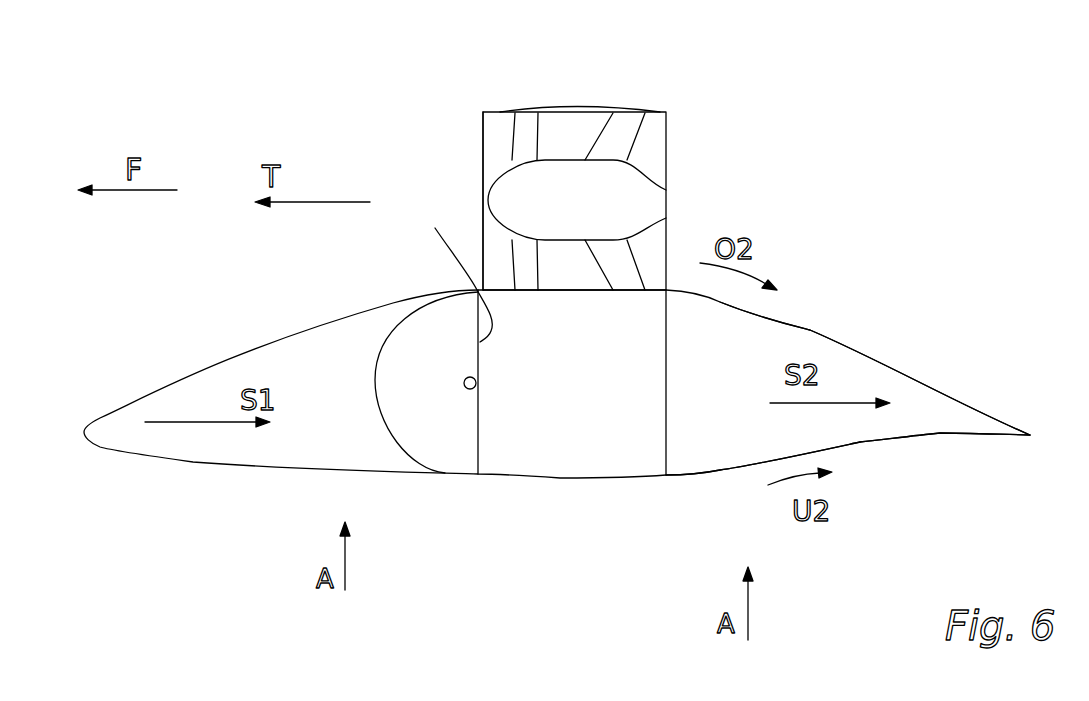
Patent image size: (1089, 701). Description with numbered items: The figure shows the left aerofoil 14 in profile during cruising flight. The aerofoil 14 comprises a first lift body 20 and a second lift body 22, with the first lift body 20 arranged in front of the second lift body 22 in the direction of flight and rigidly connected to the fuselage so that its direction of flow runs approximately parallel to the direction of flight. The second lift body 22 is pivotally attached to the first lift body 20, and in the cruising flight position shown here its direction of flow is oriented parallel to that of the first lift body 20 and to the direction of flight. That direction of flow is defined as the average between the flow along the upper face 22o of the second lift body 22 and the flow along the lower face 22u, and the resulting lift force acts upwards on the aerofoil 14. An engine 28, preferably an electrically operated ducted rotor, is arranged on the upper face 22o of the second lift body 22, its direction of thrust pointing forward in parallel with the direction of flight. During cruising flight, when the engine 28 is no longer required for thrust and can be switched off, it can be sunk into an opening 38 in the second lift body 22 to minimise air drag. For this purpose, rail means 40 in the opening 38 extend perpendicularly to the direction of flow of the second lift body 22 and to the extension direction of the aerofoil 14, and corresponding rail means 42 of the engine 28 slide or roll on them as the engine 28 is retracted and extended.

The left aerofoil 14 is at (195, 114).
The first lift body 20 is at (287, 348).
The second lift body 22 is at (860, 430).
The upper face of the second lift body 22o is at (813, 332).
The lower face of the second lift body 22u is at (737, 470).
The engine 28 is at (668, 110).
The opening 38 is at (448, 263).
The rail means 40 is at (480, 420).
The rail means of the engine 42 is at (483, 152).